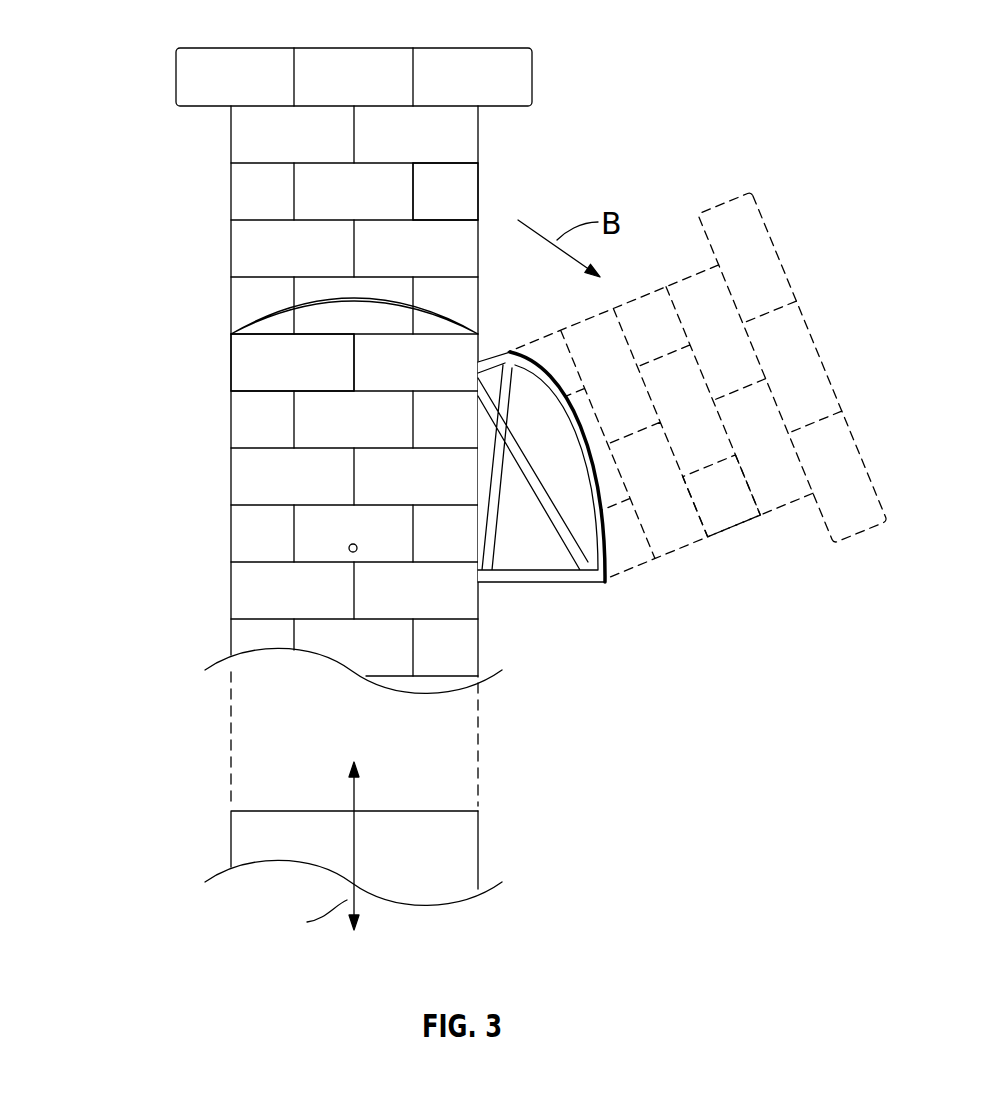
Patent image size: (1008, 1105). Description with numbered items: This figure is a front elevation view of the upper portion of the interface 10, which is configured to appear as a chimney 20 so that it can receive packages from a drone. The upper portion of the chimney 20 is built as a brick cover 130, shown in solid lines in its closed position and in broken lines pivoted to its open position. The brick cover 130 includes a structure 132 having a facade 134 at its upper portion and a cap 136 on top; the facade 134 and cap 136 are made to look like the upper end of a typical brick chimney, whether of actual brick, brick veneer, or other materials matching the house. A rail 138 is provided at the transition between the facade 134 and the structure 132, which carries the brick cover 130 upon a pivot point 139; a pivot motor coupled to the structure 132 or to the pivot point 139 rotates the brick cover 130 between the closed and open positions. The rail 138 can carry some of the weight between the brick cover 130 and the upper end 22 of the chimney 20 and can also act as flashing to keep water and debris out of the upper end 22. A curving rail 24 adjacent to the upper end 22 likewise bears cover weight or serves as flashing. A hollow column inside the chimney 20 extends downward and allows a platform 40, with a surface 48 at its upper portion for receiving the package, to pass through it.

The interface 10 is at (132, 642).
The chimney 20 is at (456, 391).
The upper end 22 is at (232, 365).
The rail 24 is at (345, 300).
The platform 40 is at (510, 841).
The surface 48 is at (255, 811).
The brick cover 130 is at (491, 345).
The structure 132 is at (592, 501).
The facade 134 is at (458, 193).
The cap 136 is at (470, 57).
The rail 138 is at (605, 548).
The pivot point 139 is at (349, 546).